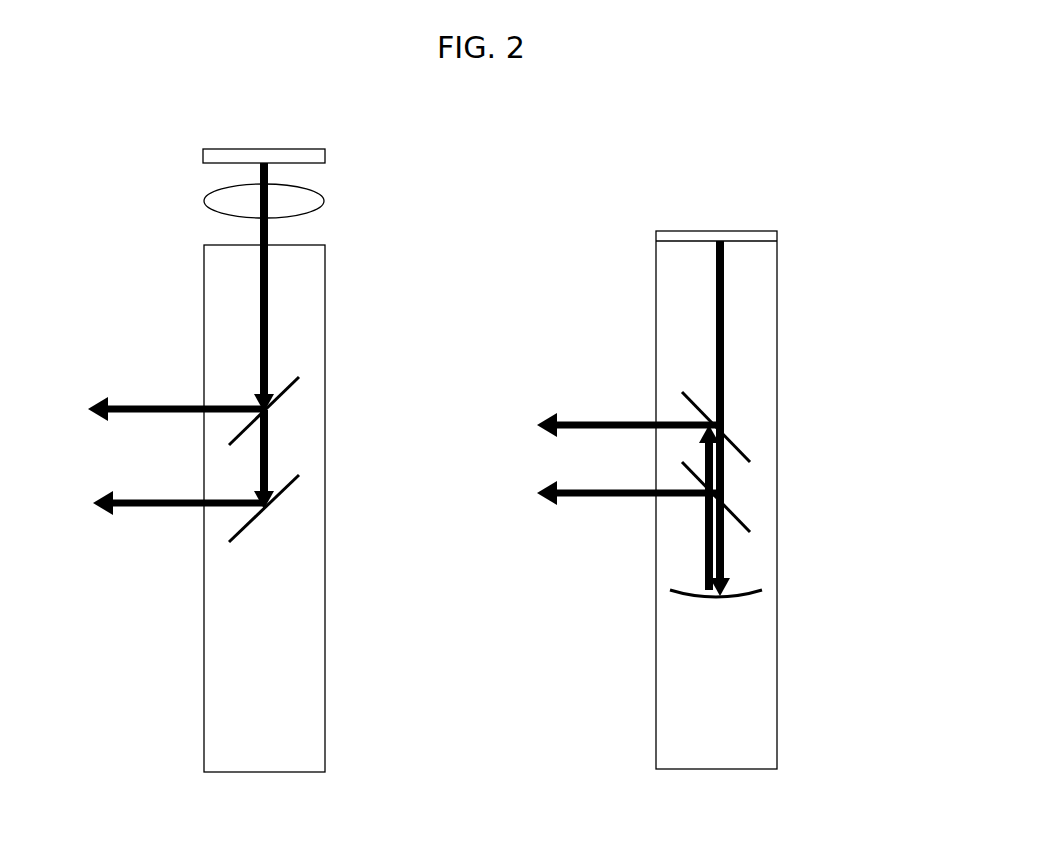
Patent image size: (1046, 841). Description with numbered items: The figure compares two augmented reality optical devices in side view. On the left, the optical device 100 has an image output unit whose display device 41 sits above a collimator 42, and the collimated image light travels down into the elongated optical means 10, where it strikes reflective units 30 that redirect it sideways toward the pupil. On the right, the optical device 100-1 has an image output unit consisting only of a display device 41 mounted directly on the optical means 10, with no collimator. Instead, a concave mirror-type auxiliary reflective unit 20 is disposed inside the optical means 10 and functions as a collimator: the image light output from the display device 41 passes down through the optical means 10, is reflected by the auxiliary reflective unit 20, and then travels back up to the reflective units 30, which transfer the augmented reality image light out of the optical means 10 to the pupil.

The optical device for augmented reality 100 is at (105, 247).
The optical device for augmented reality 100-1 is at (850, 256).
The optical means 10 is at (204, 597).
The auxiliary reflective unit 20 is at (762, 592).
The reflective unit 30 is at (287, 392).
The display device 41 is at (325, 157).
The collimator 42 is at (325, 200).